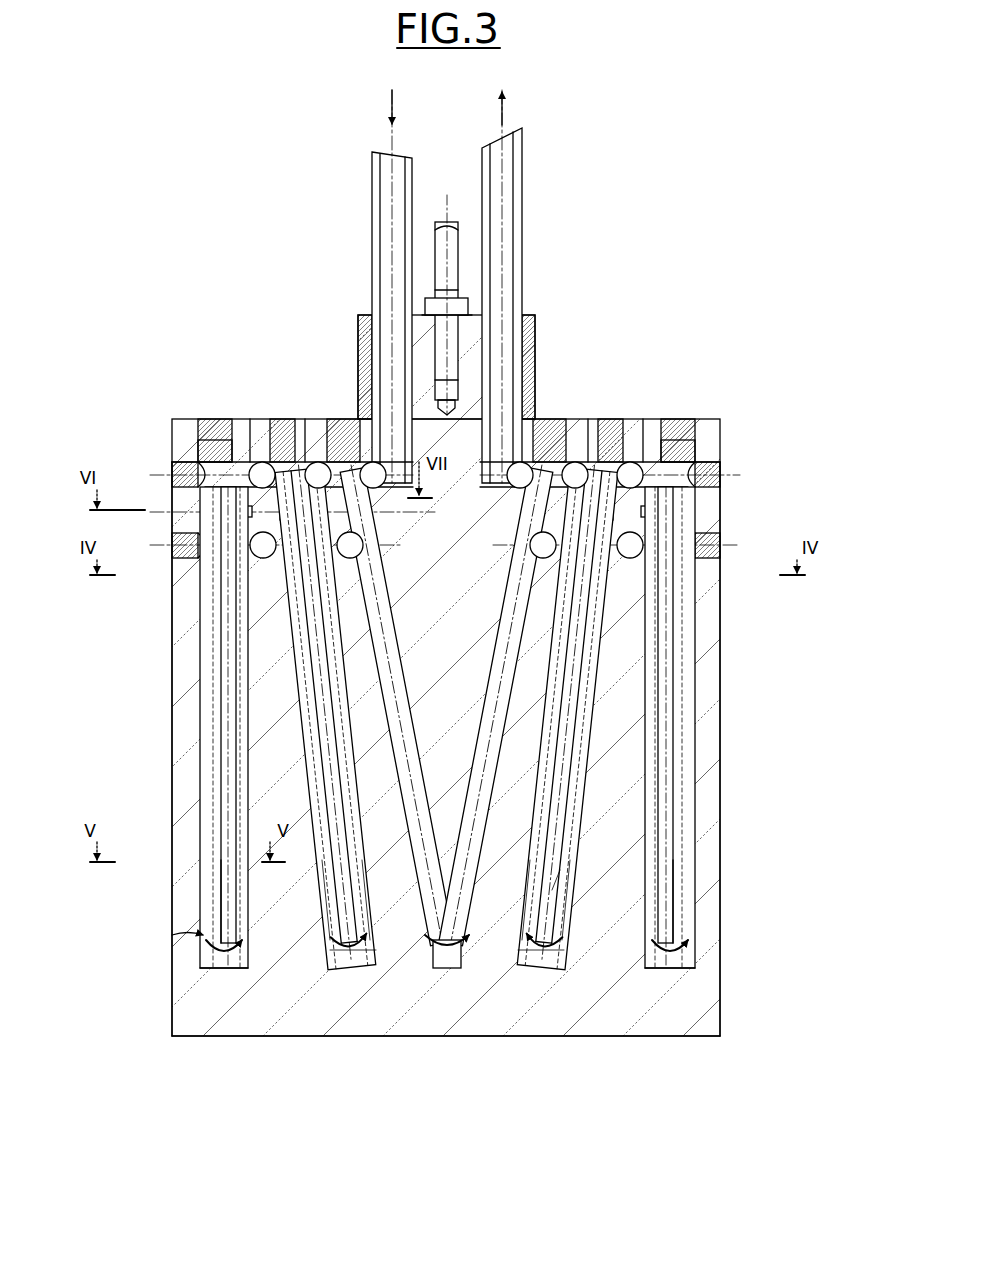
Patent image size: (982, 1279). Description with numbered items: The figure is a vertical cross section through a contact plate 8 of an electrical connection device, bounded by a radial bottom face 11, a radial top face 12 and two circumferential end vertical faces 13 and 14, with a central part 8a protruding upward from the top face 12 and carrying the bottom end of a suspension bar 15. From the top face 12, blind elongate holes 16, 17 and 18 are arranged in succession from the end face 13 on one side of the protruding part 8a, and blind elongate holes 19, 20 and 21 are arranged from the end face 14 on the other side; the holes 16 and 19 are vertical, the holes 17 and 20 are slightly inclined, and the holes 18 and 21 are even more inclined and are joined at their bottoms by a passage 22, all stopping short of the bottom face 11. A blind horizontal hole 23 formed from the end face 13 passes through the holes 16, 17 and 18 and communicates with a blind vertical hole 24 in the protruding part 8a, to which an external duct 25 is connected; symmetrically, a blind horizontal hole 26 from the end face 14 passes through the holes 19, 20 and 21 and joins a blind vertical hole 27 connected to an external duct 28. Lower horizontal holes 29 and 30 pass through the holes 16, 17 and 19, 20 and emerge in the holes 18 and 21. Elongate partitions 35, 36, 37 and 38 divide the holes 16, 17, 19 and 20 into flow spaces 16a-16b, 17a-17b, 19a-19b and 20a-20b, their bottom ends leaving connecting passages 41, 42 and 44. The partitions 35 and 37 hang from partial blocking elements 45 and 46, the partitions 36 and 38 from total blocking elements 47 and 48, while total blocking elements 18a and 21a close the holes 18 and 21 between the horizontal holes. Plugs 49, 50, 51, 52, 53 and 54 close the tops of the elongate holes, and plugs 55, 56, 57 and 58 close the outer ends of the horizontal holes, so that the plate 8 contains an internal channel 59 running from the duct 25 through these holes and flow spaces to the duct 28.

The contact plate 8 is at (207, 345).
The central part 8a is at (470, 402).
The radial bottom face 11 is at (180, 1036).
The radial top face 12 is at (712, 424).
The circumferential end vertical face 13 is at (172, 676).
The circumferential end vertical face 14 is at (720, 676).
The suspension bar 15 is at (447, 222).
The blind elongate hole 16 is at (181, 788).
The elongate flow space 16a is at (213, 710).
The elongate flow space 16b is at (236, 735).
The blind elongate hole 17 is at (315, 776).
The elongate flow space 17a is at (328, 895).
The elongate flow space 17b is at (365, 895).
The blind elongate hole 18 is at (420, 940).
The total blocking element 18a is at (340, 555).
The blind elongate hole 19 is at (710, 730).
The elongate flow space 19a is at (682, 710).
The elongate flow space 19b is at (660, 735).
The blind elongate hole 20 is at (594, 776).
The elongate flow space 20a is at (570, 895).
The elongate flow space 20b is at (530, 895).
The blind elongate hole 21 is at (470, 940).
The total blocking element 21a is at (553, 555).
The passage 22 is at (447, 968).
The blind horizontal hole 23 is at (262, 460).
The blind vertical hole 24 is at (372, 440).
The external duct 25 is at (372, 232).
The blind horizontal hole 26 is at (631, 460).
The blind vertical hole 27 is at (512, 440).
The external duct 28 is at (522, 232).
The blind horizontal hole 29 is at (262, 558).
The blind horizontal hole 30 is at (632, 558).
The elongate partition 35 is at (225, 888).
The elongate partition 36 is at (240, 960).
The elongate partition 37 is at (670, 888).
The elongate partition 38 is at (560, 870).
The passage 41 is at (228, 955).
The passage 42 is at (346, 950).
The passage 44 is at (550, 950).
The partial blocking element 45 is at (235, 468).
The partial blocking element 46 is at (660, 468).
The total blocking element 47 is at (245, 512).
The total blocking element 48 is at (648, 512).
The plug 49 is at (224, 440).
The plug 50 is at (290, 445).
The plug 51 is at (318, 460).
The plug 52 is at (672, 440).
The plug 53 is at (603, 445).
The plug 54 is at (565, 460).
The plug 55 is at (178, 476).
The plug 56 is at (714, 476).
The plug 57 is at (178, 545).
The plug 58 is at (714, 545).
The internal channel 59 is at (172, 935).